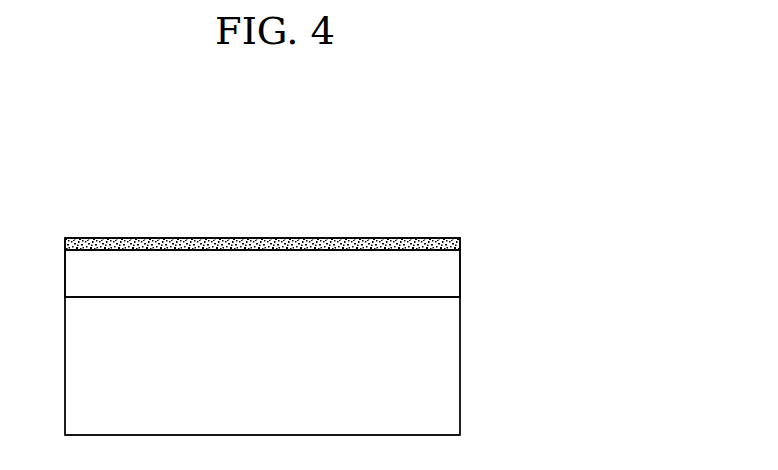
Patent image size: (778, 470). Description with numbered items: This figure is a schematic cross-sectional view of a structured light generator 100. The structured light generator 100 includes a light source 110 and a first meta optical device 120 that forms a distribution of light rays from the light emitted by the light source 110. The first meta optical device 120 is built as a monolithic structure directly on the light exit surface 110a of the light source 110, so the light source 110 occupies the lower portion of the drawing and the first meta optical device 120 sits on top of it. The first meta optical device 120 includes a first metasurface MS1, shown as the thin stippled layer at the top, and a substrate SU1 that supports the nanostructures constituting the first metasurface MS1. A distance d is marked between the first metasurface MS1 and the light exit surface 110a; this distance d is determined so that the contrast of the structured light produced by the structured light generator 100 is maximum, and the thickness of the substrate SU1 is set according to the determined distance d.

The structured light generator 100 is at (468, 201).
The light source 110 is at (450, 368).
The light exit surface 110a is at (432, 297).
The first meta optical device 120 is at (547, 220).
The first metasurface MS1 is at (460, 244).
The substrate SU1 is at (447, 266).
The distance d is at (62, 249).